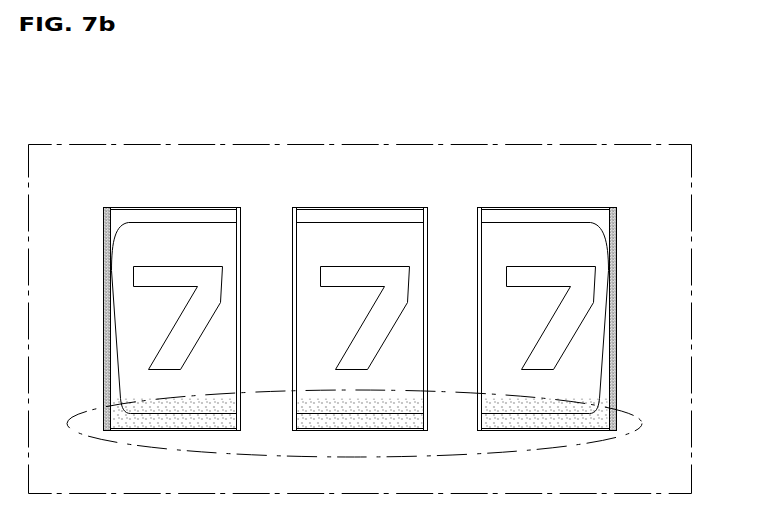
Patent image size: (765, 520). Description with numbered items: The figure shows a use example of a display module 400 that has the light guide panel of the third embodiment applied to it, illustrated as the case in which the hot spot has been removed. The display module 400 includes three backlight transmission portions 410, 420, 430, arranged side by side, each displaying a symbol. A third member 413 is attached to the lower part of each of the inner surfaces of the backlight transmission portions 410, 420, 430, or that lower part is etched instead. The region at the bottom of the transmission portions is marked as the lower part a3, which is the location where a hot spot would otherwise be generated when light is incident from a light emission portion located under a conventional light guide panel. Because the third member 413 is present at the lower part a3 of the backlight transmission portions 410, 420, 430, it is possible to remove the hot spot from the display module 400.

The display module 400 is at (472, 144).
The backlight transmission portion 410 is at (172, 207).
The backlight transmission portion 420 is at (359, 207).
The backlight transmission portion 430 is at (546, 207).
The third member 413 is at (190, 430).
The lower part a3 is at (642, 420).